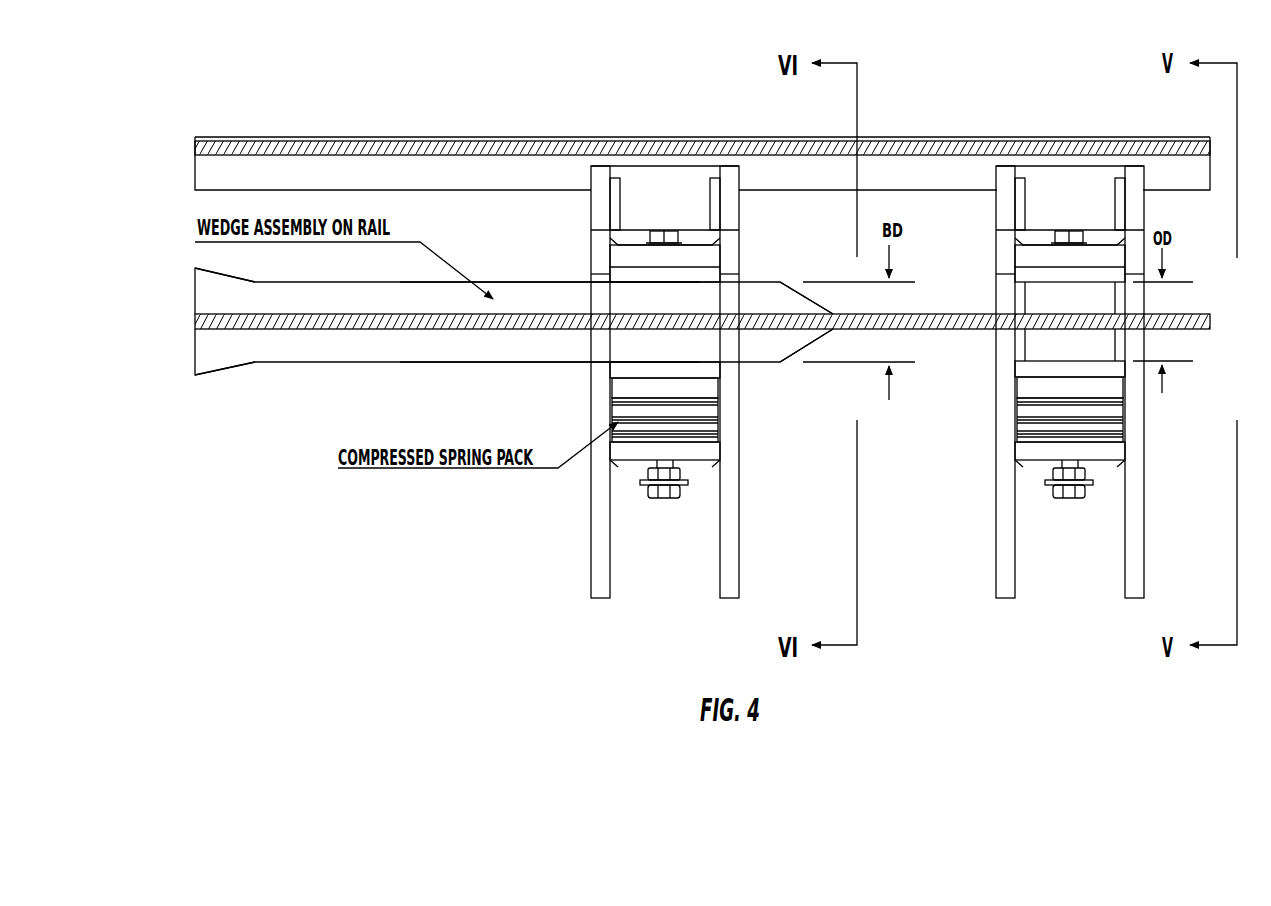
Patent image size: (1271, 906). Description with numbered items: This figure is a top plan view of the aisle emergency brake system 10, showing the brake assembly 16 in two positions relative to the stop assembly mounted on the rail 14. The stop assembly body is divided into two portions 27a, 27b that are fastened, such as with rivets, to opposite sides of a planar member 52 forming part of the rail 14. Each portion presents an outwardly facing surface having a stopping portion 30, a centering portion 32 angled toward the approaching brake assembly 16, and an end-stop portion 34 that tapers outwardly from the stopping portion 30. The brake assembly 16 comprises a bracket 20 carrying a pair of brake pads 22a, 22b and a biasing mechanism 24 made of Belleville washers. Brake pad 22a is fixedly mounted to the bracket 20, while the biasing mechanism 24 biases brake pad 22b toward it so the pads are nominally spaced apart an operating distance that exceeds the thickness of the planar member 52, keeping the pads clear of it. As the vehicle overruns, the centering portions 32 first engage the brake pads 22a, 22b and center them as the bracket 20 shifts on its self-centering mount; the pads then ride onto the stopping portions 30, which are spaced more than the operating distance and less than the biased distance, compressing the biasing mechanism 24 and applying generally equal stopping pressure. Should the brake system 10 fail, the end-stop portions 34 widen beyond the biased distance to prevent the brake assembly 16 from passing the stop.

The aisle emergency brake system 10 is at (508, 81).
The rail 14 is at (537, 137).
The brake assembly 16 is at (742, 412).
The bracket 20 is at (739, 502).
The brake pad 22a is at (702, 275).
The brake pad 22b is at (710, 368).
The biasing mechanism 24 is at (718, 430).
The body portion 27a is at (347, 285).
The body portion 27b is at (352, 362).
The stopping portion 30 is at (527, 282).
The centering portion 32 is at (810, 344).
The end-stop portion 34 is at (230, 275).
The planar member 52 is at (1192, 313).